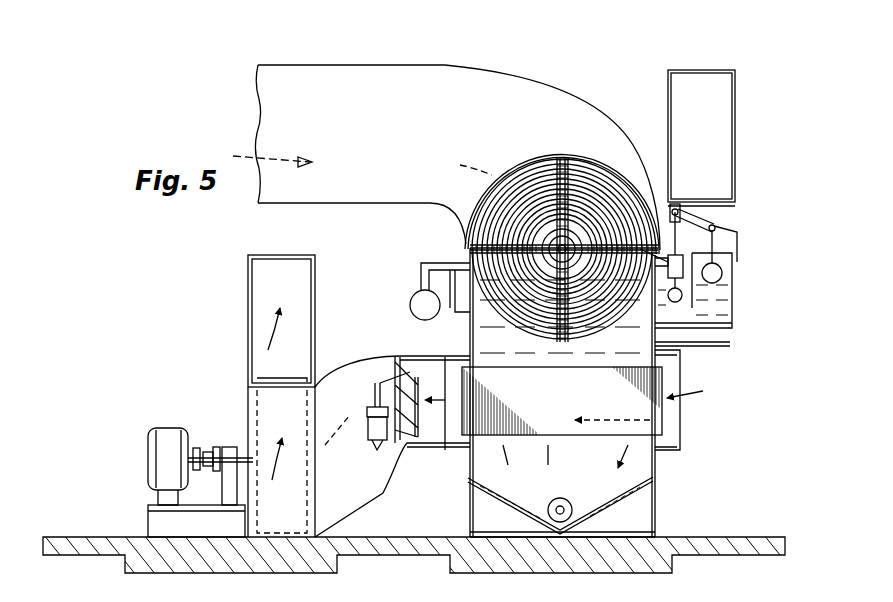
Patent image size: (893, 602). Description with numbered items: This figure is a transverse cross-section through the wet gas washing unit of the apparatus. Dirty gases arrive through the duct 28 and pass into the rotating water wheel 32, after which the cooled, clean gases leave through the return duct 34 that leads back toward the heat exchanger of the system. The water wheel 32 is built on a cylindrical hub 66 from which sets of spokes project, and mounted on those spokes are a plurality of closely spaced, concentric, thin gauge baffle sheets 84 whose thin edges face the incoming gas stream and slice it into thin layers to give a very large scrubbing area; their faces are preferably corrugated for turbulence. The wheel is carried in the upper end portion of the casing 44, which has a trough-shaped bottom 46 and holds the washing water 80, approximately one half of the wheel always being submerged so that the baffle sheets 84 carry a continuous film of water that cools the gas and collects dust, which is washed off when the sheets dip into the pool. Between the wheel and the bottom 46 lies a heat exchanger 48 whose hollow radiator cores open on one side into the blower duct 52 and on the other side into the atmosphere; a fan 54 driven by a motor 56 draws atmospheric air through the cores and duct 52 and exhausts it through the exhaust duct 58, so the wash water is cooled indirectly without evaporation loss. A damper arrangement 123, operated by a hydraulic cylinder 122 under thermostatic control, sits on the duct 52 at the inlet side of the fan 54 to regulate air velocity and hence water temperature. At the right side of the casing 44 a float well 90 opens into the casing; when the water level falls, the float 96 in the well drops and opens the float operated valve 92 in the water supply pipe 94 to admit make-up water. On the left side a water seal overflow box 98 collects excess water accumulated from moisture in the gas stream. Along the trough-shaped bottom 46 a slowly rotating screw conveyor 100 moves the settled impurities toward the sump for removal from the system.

The duct 28 is at (497, 77).
The water wheel 32 is at (544, 228).
The return duct 34 is at (707, 72).
The baffle sheets 84 is at (488, 215).
The water supply pipe 94 is at (662, 262).
The hub 66 is at (550, 270).
The casing 44 is at (658, 467).
The trough-shaped bottom 46 is at (622, 488).
The screw conveyor 100 is at (560, 498).
The heat exchanger 48 is at (664, 418).
The washing water 80 is at (637, 345).
The float well 90 is at (735, 322).
The float operated valve 92 is at (727, 228).
The float 96 is at (718, 275).
The water seal overflow box 98 is at (412, 300).
The blower duct 52 is at (363, 367).
The damper arrangement 123 is at (403, 372).
The hydraulic cylinder 122 is at (362, 437).
The exhaust duct 58 is at (248, 328).
The fan 54 is at (255, 425).
The motor 56 is at (168, 430).